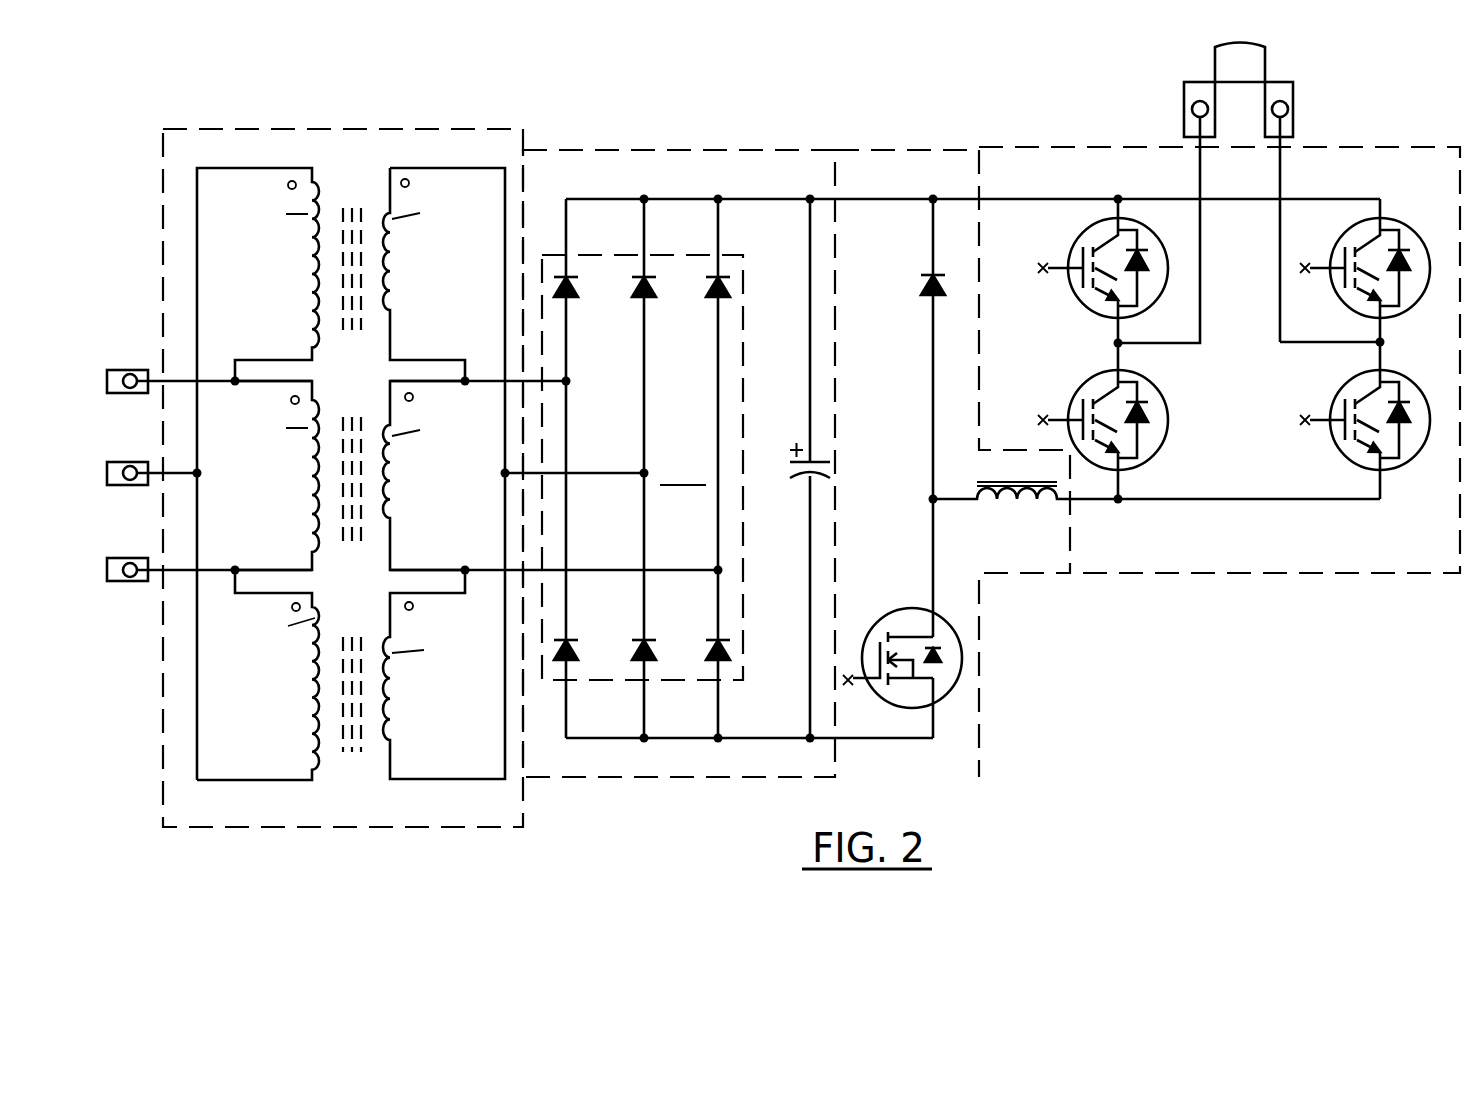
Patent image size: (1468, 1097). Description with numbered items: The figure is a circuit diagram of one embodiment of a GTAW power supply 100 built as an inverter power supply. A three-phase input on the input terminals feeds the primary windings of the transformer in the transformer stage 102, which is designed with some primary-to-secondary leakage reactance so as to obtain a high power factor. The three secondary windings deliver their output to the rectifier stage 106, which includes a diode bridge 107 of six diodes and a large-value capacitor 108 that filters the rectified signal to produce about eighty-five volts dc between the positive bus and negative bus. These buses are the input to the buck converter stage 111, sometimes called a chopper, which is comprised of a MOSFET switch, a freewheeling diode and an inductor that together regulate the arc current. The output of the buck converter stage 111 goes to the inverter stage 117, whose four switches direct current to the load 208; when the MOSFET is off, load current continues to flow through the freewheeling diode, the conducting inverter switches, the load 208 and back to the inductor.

The GTAW power supply 100 is at (792, 96).
The transformer stage 102 is at (441, 129).
The rectifier stage 106 is at (658, 150).
The diode bridge 107 is at (723, 255).
The capacitor 108 is at (795, 478).
The buck converter stage 111 is at (904, 150).
The inverter stage 117 is at (1103, 147).
The load 208 is at (1268, 51).